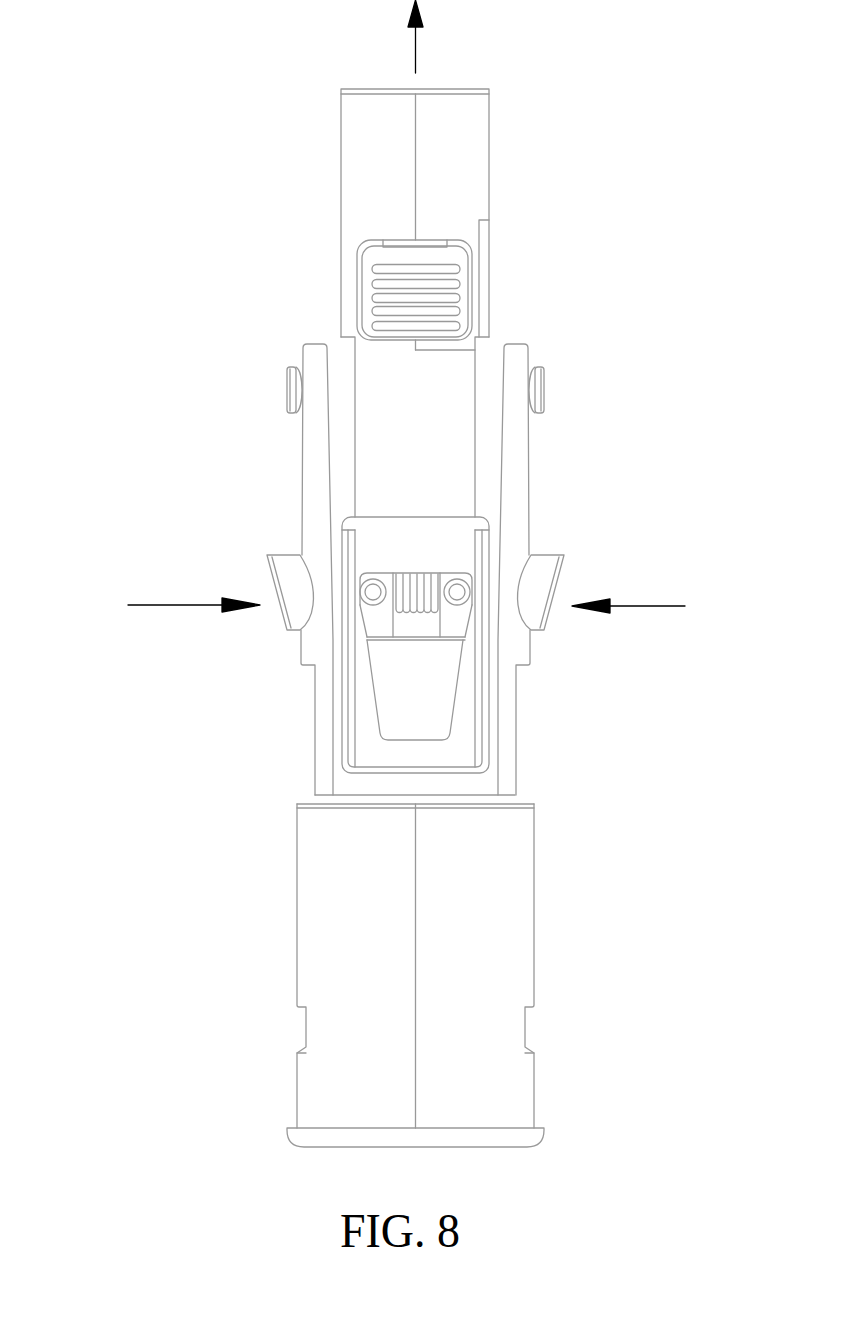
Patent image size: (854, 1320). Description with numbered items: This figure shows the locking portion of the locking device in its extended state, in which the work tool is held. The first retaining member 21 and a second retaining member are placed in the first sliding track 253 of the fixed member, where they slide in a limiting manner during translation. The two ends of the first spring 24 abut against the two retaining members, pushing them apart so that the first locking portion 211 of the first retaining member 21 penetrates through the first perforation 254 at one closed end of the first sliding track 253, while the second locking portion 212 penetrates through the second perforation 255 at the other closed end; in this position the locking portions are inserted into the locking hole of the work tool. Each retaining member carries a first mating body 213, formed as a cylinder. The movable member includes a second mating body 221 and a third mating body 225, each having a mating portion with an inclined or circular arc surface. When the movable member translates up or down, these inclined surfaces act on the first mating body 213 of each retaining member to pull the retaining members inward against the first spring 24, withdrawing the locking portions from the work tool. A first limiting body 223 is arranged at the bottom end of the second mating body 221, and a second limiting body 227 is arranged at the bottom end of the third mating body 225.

The first spring 24 is at (420, 573).
The first retaining member 21 is at (378, 621).
The first locking portion 211 is at (293, 573).
The second locking portion 212 is at (540, 593).
The first mating body 213 is at (373, 592).
The first perforation 254 is at (300, 555).
The second perforation 255 is at (530, 573).
The first sliding track 253 is at (422, 637).
The second mating body 221 is at (370, 728).
The first limiting body 223 is at (400, 752).
The third mating body 225 is at (460, 713).
The second limiting body 227 is at (433, 749).